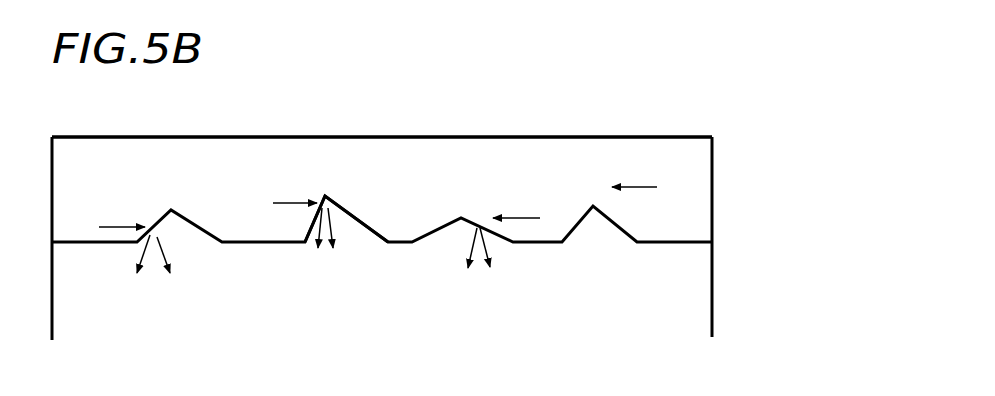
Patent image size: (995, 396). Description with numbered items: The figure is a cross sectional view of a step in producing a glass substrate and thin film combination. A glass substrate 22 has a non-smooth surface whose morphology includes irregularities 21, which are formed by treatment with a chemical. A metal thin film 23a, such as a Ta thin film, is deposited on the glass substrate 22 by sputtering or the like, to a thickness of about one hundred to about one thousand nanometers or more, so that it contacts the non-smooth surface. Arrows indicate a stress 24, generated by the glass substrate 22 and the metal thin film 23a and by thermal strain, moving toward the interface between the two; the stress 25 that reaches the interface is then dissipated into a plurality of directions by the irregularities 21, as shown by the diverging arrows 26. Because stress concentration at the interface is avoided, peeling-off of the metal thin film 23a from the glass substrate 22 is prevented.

The irregularities 21 is at (325, 190).
The glass substrate 22 is at (678, 303).
The metal thin film 23a is at (452, 165).
The stress 24 is at (645, 187).
The stress at the interface 25 is at (290, 203).
The stress dissipation 26 is at (333, 225).